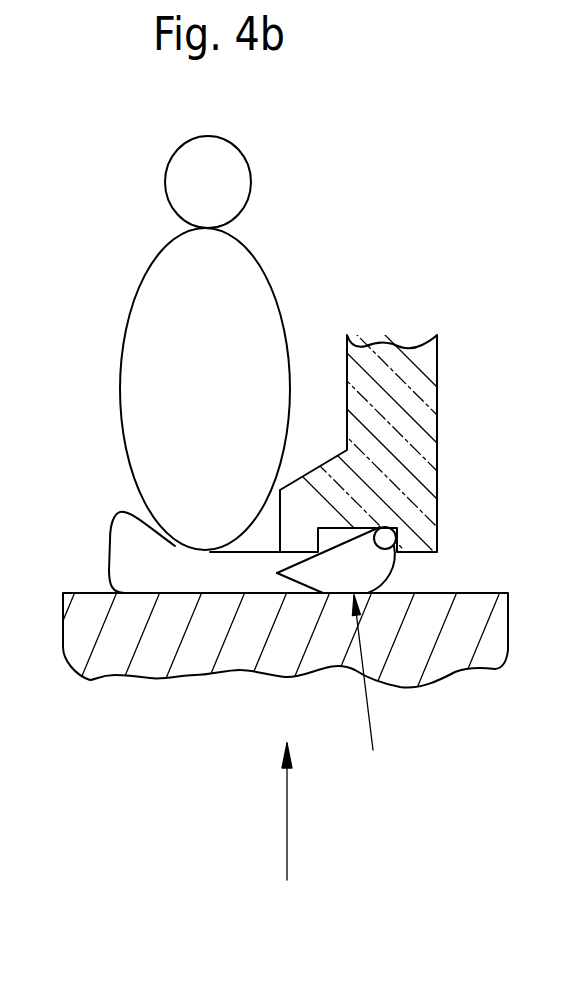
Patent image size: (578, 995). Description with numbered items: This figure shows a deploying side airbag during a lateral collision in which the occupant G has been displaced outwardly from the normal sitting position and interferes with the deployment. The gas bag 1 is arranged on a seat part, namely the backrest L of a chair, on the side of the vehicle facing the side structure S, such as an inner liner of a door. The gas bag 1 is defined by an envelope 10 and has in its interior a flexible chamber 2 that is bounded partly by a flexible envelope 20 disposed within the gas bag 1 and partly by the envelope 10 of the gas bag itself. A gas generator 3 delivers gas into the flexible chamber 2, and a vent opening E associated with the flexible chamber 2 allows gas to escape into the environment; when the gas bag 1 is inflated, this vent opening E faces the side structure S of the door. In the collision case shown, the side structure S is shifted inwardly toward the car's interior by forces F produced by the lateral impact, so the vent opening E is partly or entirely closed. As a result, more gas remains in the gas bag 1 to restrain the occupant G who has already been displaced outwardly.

The glass body / ball G is at (159, 305).
The backrest L is at (418, 438).
The side structure S is at (457, 657).
The gas bag 1 is at (86, 577).
The envelope 10 is at (103, 540).
The flexible chamber 2 is at (353, 583).
The flexible envelope 20 is at (285, 577).
The gas generator 3 is at (385, 538).
The vent opening E is at (376, 696).
The forces F is at (287, 823).